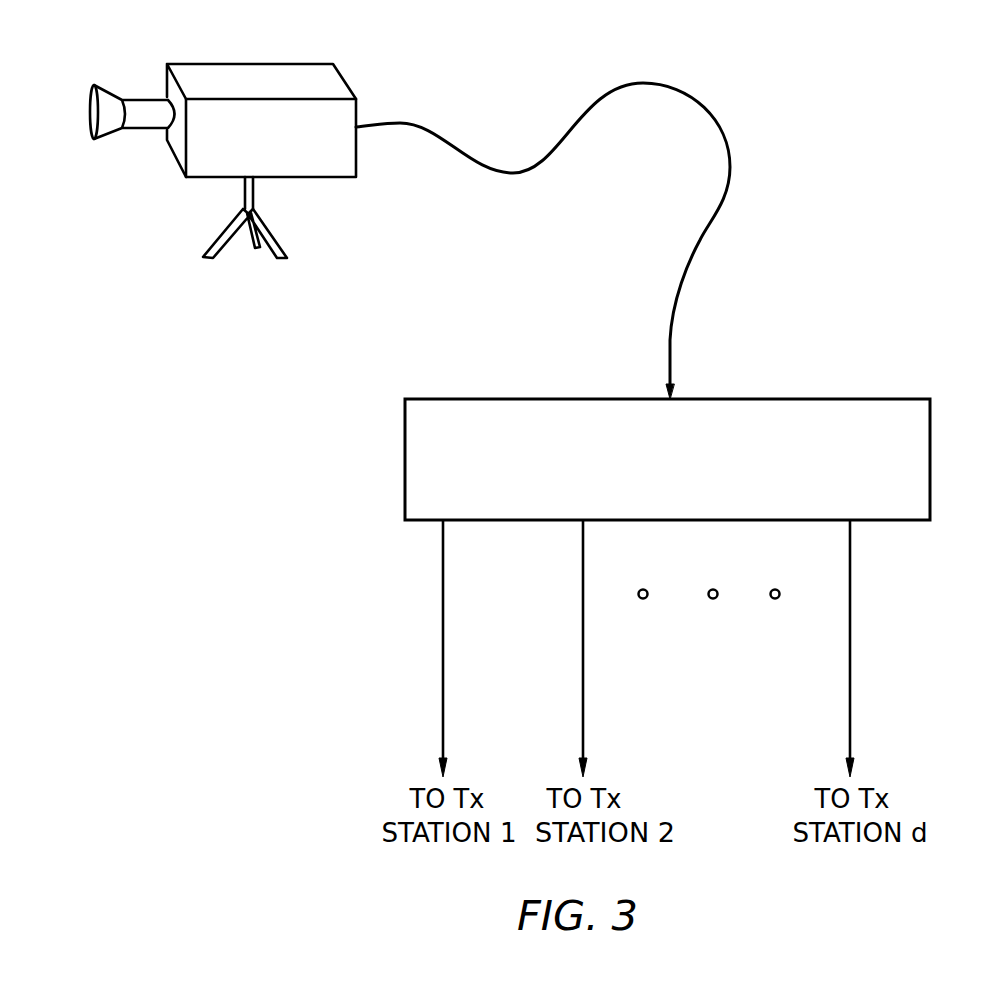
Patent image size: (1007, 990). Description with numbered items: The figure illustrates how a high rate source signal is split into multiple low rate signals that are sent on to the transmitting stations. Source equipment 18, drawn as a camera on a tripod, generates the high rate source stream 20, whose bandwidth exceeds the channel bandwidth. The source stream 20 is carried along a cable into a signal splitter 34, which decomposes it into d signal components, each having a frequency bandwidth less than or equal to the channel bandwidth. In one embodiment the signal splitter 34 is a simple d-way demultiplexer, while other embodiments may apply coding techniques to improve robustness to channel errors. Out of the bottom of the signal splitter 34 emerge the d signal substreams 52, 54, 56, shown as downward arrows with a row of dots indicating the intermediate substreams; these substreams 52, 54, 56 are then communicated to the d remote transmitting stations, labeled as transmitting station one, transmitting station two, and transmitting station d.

The source equipment 18 is at (273, 63).
The high rate source stream 20 is at (702, 100).
The signal splitter 34 is at (795, 399).
The signal substream 52 is at (443, 607).
The signal substream 54 is at (583, 670).
The signal substream 56 is at (850, 663).